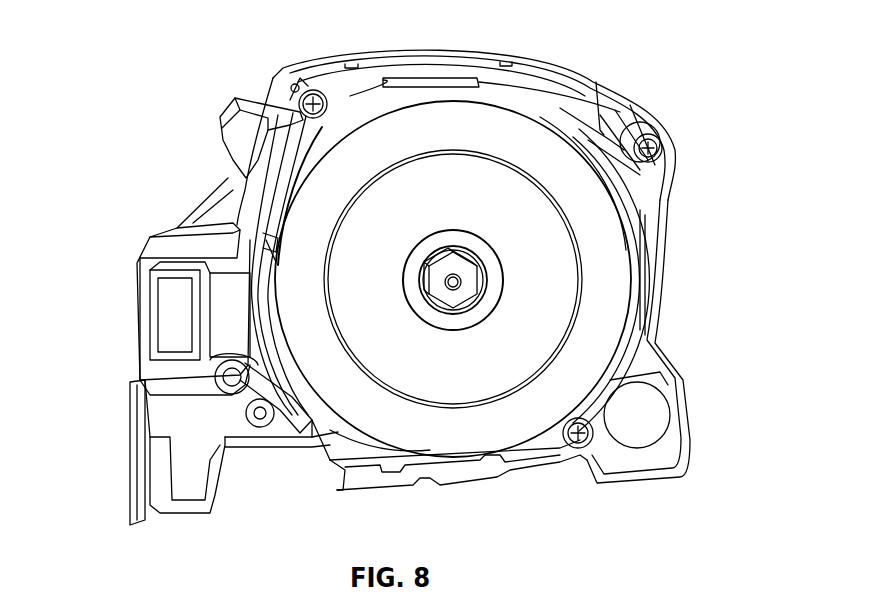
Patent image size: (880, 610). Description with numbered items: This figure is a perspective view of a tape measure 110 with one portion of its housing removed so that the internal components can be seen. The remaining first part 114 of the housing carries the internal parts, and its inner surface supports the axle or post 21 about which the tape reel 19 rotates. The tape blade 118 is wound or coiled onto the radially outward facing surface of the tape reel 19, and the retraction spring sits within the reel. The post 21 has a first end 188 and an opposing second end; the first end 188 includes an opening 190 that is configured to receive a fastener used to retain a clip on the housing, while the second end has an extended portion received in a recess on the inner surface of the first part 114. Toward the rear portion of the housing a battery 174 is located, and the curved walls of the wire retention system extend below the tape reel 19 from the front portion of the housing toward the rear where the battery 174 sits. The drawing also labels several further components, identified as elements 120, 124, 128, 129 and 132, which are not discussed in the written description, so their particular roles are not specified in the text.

The tape measure 110 is at (126, 120).
The first part of housing 114 is at (565, 72).
The tape blade 118 is at (338, 430).
The mounting bracket 120 is at (133, 462).
The latch assembly 124 is at (129, 302).
The latch member 128 is at (235, 128).
The fastener 129 is at (342, 112).
The latch housing 132 is at (150, 330).
The tape reel 19 is at (595, 288).
The post 21 is at (435, 250).
The first end of post 188 is at (477, 272).
The opening 190 is at (454, 286).
The battery 174 is at (643, 420).